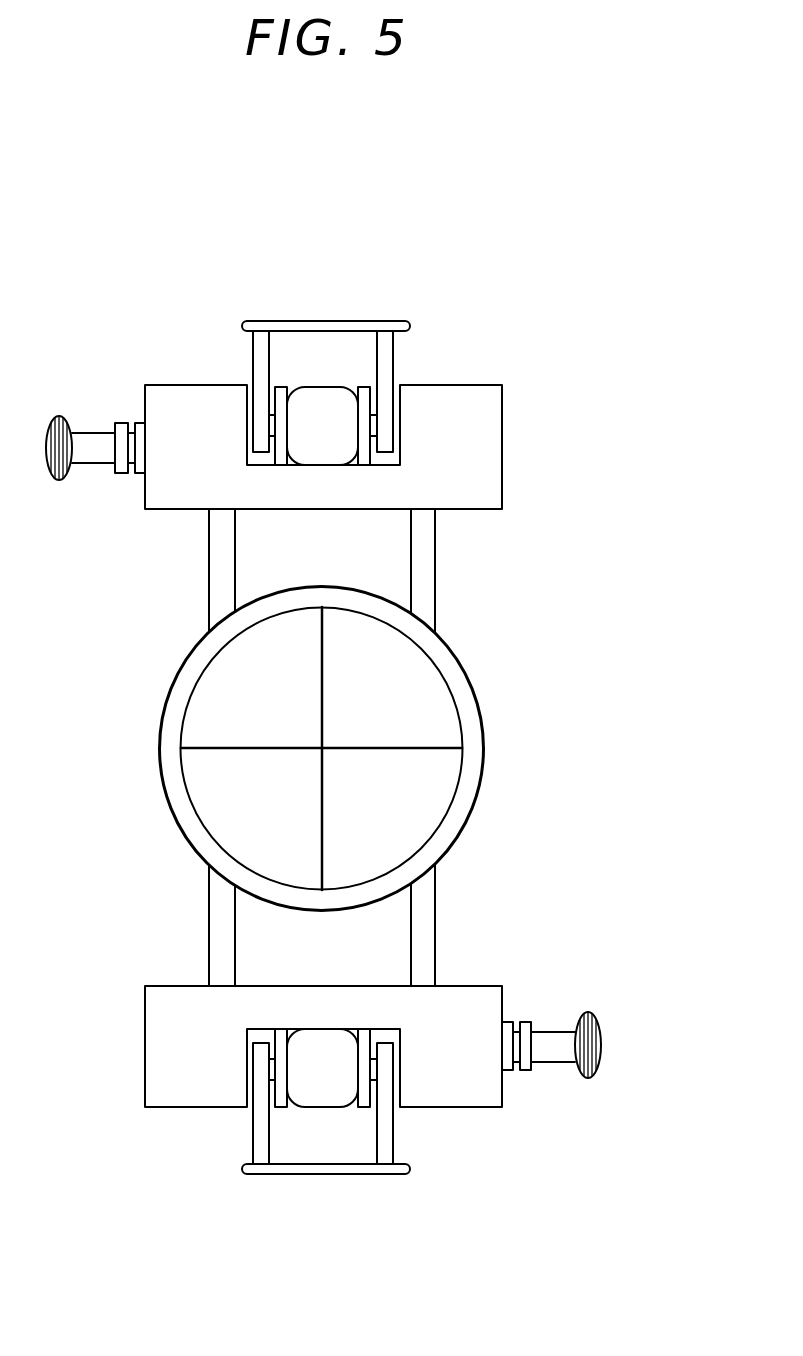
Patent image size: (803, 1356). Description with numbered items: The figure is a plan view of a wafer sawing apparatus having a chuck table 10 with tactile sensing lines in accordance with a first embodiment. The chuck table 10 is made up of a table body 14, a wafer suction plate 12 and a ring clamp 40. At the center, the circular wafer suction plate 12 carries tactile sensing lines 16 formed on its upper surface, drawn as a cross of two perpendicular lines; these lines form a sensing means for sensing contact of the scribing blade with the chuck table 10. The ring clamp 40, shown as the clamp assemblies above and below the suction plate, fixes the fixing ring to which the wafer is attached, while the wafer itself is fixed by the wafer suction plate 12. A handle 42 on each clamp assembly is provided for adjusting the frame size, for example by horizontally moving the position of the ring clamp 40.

The chuck table 10 is at (356, 796).
The wafer suction plate 12 is at (210, 700).
The table body 14 is at (174, 793).
The tactile sensing lines 16 is at (437, 752).
The ring clamp 40 is at (322, 1174).
The handle 42 is at (602, 1043).